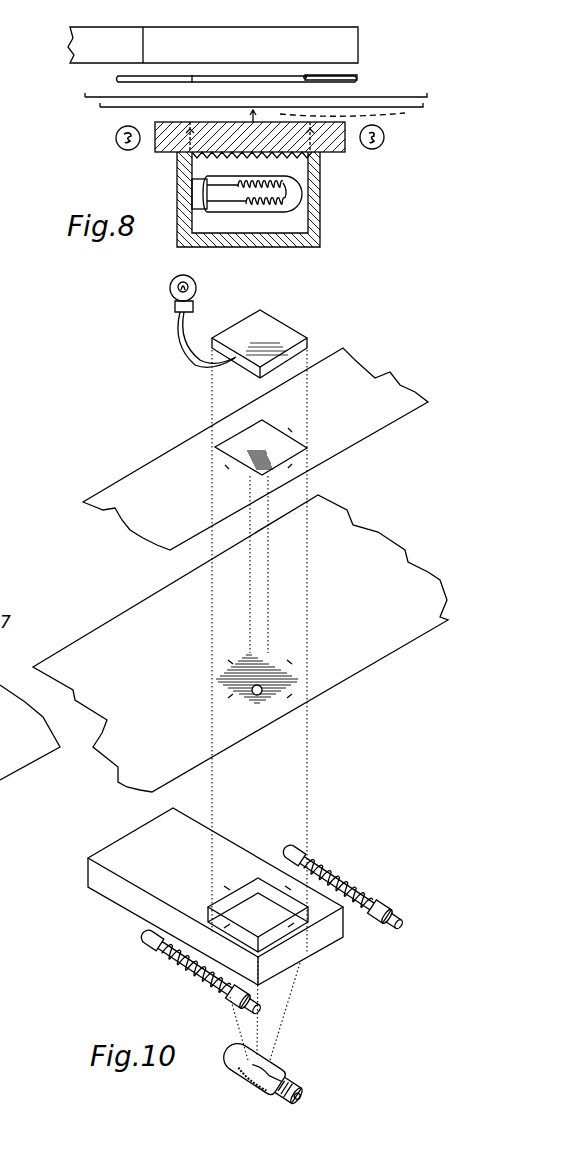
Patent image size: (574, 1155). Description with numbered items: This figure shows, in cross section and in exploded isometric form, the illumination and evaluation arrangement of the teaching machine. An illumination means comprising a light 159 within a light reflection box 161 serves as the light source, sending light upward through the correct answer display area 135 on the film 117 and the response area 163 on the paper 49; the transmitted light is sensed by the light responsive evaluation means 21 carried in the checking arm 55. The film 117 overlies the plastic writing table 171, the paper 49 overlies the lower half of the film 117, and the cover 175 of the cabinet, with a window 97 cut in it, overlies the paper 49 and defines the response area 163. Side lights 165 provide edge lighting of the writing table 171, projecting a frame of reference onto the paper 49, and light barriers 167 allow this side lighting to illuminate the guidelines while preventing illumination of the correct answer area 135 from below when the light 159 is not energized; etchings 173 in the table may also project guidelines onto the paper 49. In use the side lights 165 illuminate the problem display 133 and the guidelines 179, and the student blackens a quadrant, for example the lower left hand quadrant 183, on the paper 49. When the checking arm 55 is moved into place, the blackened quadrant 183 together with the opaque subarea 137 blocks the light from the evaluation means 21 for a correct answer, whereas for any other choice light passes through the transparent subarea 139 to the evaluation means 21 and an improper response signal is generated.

In FIG. 8, the light responsive evaluation means 21 is at (348, 42).
In FIG. 10, the light responsive evaluation means 21 is at (262, 325).
In FIG. 8, the paper 49 is at (85, 97).
In FIG. 10, the paper 49 is at (373, 382).
In FIG. 8, the checking arm 55 is at (120, 40).
In FIG. 8, the window 97 is at (307, 77).
In FIG. 8, the film 117 is at (105, 108).
In FIG. 10, the film 117 is at (383, 552).
In FIG. 10, the problem display 133 is at (155, 612).
In FIG. 8, the correct answer display area 135 is at (360, 120).
In FIG. 10, the correct answer display area 135 is at (290, 688).
In FIG. 10, the opaque subarea 137 is at (288, 682).
In FIG. 10, the transparent subarea 139 is at (259, 695).
In FIG. 8, the light 159 is at (300, 203).
In FIG. 10, the light 159 is at (273, 1062).
In FIG. 8, the light reflection box 161 is at (277, 243).
In FIG. 8, the response area 163 is at (282, 97).
In FIG. 8, the side lights 165 is at (116, 140).
In FIG. 10, the side lights 165 is at (360, 884).
In FIG. 8, the light barrier 167 is at (168, 152).
In FIG. 10, the light barrier 167 is at (283, 908).
In FIG. 8, the writing table 171 is at (160, 143).
In FIG. 8, the etchings 173 is at (280, 152).
In FIG. 8, the cover 175 is at (115, 80).
In FIG. 10, the guidelines 179 is at (237, 424).
In FIG. 10, the lower left hand quadrant 183 is at (277, 467).